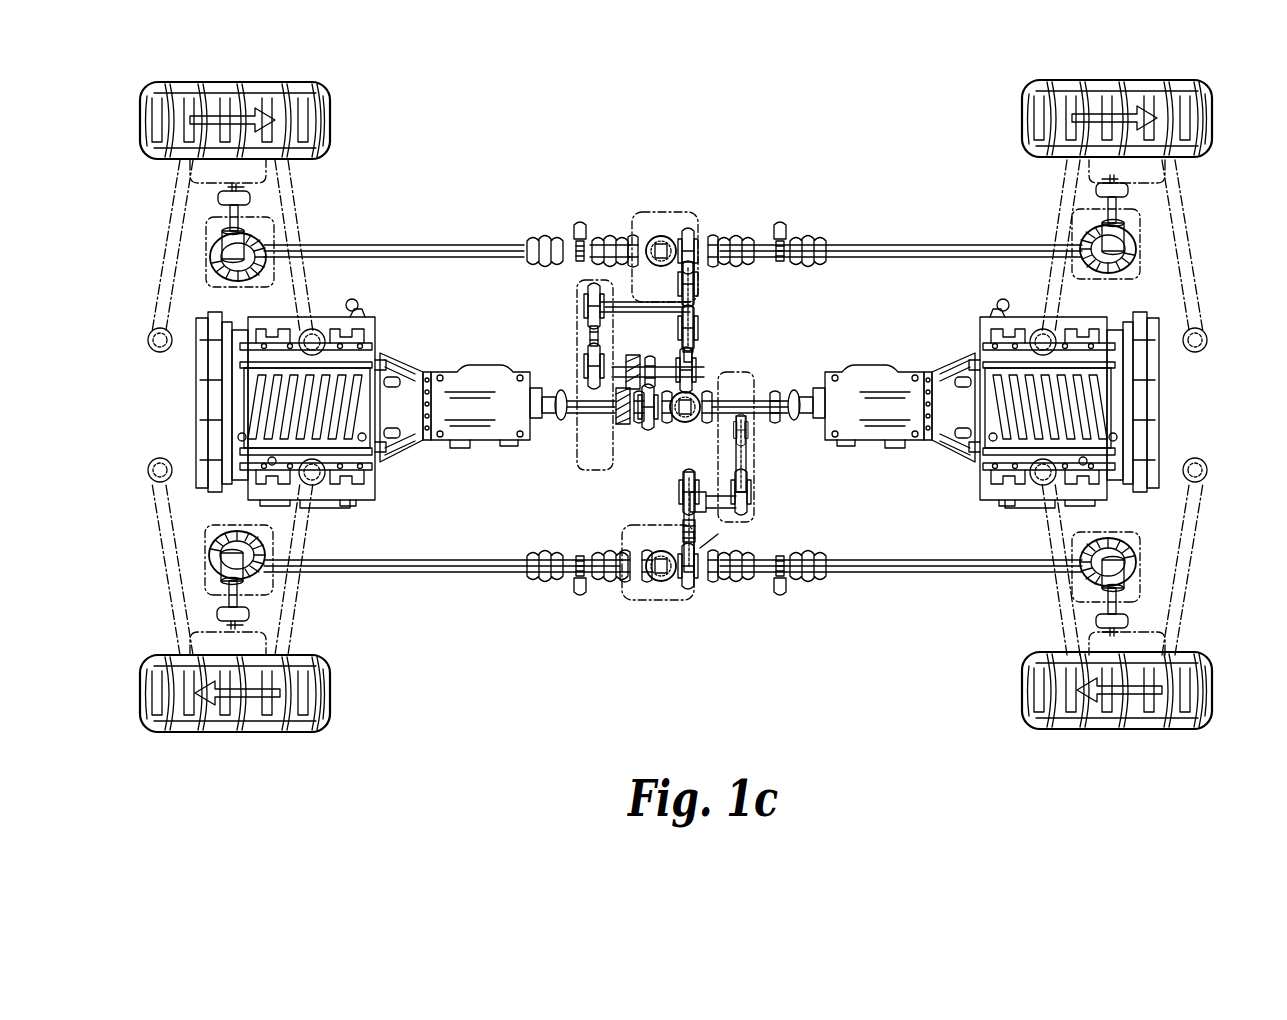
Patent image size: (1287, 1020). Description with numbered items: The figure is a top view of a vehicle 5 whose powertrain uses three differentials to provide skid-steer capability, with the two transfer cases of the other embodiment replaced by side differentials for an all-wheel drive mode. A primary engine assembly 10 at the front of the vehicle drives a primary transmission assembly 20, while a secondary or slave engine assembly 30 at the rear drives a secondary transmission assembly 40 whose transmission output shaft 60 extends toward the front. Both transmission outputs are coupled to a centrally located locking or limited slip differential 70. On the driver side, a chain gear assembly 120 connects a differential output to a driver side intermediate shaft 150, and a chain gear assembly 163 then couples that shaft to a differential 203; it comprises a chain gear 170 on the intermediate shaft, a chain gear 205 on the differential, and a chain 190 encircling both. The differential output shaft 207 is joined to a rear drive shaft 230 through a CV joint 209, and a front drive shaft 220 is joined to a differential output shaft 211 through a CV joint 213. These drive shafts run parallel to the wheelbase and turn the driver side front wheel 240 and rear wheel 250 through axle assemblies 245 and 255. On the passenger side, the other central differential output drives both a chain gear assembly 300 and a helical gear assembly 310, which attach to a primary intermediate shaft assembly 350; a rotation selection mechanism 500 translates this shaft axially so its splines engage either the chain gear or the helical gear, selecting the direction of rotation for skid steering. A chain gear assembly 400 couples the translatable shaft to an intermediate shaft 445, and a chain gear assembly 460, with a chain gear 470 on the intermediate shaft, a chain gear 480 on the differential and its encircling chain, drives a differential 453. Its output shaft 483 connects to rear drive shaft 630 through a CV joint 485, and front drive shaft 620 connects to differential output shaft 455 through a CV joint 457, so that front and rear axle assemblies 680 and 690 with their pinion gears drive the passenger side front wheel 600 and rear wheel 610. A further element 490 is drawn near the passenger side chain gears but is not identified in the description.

The vehicle 5 is at (930, 98).
The primary engine assembly 10 is at (200, 320).
The primary transmission assembly 20 is at (426, 358).
The secondary engine assembly 30 is at (1164, 398).
The secondary transmission assembly 40 is at (880, 364).
The transmission output shaft 60 is at (774, 392).
The differential 70 is at (748, 486).
The chain gear assembly 120 is at (746, 428).
The driver side intermediate shaft 150 is at (748, 492).
The chain gear assembly 163 is at (640, 570).
The chain gear 170 is at (680, 512).
The chain 190 is at (676, 548).
The differential 203 is at (655, 576).
The chain gear 205 is at (692, 580).
The differential output shaft 207 is at (714, 576).
The CV joint 209 is at (724, 548).
The differential output shaft 211 is at (660, 582).
The CV joint 213 is at (624, 572).
The drive shaft 220 is at (428, 572).
The drive shaft 230 is at (982, 572).
The driver side front wheel 240 is at (330, 692).
The axle assembly 245 is at (216, 566).
The driver side rear wheel 250 is at (1212, 682).
The axle assembly 255 is at (1144, 538).
The chain gear assembly 300 is at (618, 428).
The helical gear assembly 310 is at (573, 422).
The primary intermediate shaft assembly 350 is at (667, 364).
The chain gear assembly 400 is at (582, 334).
The intermediate shaft 445 is at (638, 304).
The differential 453 is at (662, 238).
The differential output shaft 455 is at (640, 234).
The CV joint 457 is at (598, 240).
The chain gear assembly 460 is at (698, 284).
The chain gear 470 is at (696, 330).
The chain gear 480 is at (696, 243).
The differential output shaft 483 is at (702, 262).
The CV joint 485 is at (716, 244).
The sprocket 490 is at (700, 304).
The rotation selection mechanism 500 is at (692, 364).
The passenger side front wheel 600 is at (330, 120).
The passenger side rear wheel 610 is at (1212, 120).
The drive shaft 620 is at (430, 244).
The drive shaft 630 is at (976, 244).
The front axle assembly 680 is at (212, 222).
The rear axle assembly 690 is at (1142, 218).